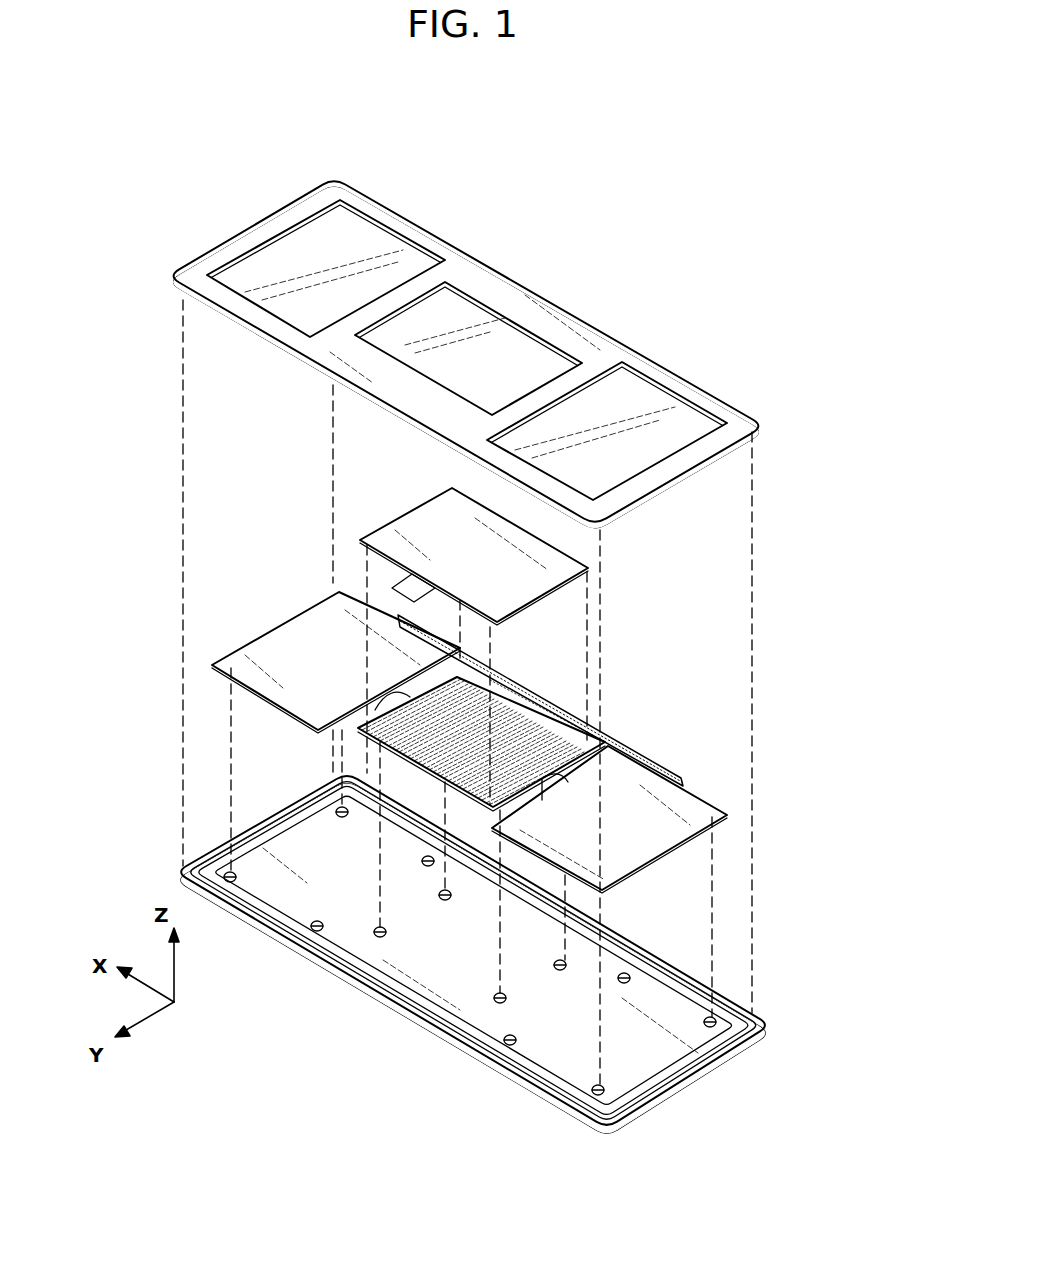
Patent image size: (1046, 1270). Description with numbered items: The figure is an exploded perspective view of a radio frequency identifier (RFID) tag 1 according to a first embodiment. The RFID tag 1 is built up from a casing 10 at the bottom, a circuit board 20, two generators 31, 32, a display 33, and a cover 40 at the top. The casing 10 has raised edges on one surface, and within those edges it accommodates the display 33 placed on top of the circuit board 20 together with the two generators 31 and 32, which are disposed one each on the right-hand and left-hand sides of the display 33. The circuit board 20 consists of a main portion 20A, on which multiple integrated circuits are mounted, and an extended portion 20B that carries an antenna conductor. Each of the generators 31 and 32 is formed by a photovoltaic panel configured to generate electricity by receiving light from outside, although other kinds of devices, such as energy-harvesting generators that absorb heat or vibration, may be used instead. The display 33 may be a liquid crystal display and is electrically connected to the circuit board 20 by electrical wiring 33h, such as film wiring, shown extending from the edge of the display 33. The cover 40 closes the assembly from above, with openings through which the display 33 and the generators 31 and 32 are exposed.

The radio frequency identifier (RFID) tag 1 is at (725, 208).
The casing 10 is at (772, 1027).
The circuit board 20 is at (673, 593).
The main portion 20A is at (543, 750).
The extended portion 20B is at (530, 700).
The generator 31 is at (298, 647).
The generator 32 is at (638, 798).
The display 33 is at (438, 538).
The electrical wiring 33h is at (412, 588).
The cover 40 is at (510, 285).